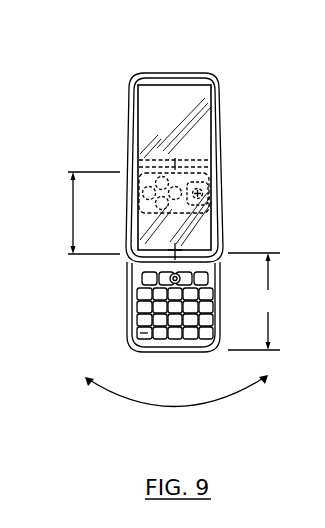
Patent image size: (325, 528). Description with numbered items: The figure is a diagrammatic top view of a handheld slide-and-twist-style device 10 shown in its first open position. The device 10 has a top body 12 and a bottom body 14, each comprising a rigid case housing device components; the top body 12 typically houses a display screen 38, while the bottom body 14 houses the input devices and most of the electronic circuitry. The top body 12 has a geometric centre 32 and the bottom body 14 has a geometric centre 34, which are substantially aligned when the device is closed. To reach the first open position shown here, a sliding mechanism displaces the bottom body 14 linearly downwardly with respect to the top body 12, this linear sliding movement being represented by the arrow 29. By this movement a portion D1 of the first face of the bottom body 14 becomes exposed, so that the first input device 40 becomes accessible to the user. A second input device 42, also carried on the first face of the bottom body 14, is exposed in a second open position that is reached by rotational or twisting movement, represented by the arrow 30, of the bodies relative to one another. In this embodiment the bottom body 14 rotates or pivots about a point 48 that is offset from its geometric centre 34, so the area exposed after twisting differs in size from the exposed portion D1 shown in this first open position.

The device 10 is at (110, 74).
The top body 12 is at (221, 113).
The bottom body 14 is at (127, 265).
The arrow 29 is at (72, 208).
The arrow 30 is at (190, 407).
The geometric centre 32 is at (171, 160).
The geometric centre 34 is at (170, 247).
The display screen 38 is at (203, 95).
The first input device 40 is at (141, 324).
The second input device 42 is at (201, 172).
The point 48 is at (175, 227).
The exposed portion D1 is at (254, 301).